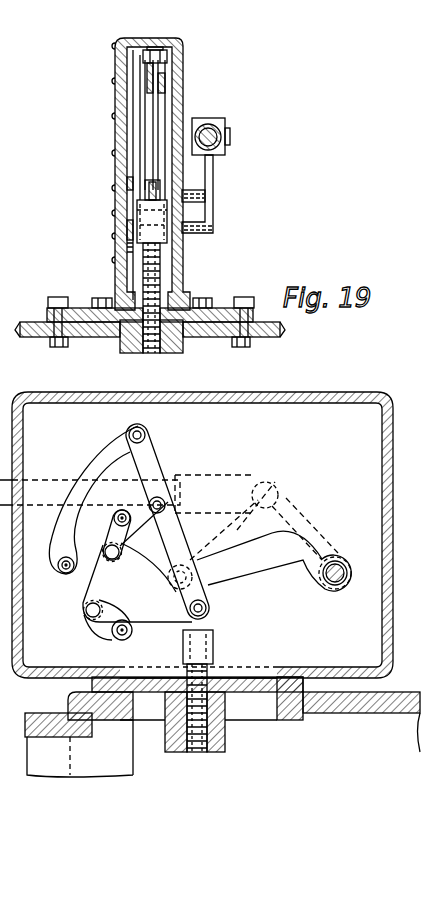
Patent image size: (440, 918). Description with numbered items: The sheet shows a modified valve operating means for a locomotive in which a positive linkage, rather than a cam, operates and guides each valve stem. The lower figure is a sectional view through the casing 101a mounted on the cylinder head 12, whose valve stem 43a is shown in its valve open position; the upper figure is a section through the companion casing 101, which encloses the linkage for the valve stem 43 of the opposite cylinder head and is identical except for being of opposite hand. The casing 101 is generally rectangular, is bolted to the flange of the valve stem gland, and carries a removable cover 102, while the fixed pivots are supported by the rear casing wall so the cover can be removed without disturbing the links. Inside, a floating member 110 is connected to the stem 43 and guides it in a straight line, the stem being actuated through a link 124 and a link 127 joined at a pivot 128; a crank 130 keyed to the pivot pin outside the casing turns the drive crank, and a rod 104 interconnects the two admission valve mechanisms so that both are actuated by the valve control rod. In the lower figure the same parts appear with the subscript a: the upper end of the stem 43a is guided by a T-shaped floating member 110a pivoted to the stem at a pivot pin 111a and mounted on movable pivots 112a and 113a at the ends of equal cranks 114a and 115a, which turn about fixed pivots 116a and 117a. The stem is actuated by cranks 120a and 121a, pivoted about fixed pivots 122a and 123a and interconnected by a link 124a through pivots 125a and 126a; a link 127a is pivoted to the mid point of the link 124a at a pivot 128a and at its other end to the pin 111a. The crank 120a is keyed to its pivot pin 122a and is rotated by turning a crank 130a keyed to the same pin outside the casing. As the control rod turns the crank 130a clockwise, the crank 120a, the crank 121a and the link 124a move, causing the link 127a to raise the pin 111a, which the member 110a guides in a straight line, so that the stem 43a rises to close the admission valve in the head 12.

In FIG. 19, the casing 101 is at (184, 48).
In FIG. 19, the removable cover 102 is at (133, 67).
In FIG. 19, the rod 104 is at (214, 155).
In FIG. 19, the floating member 110 is at (137, 212).
In FIG. 19, the link 124 is at (138, 62).
In FIG. 19, the link 127 is at (165, 130).
In FIG. 19, the pivot 128 is at (162, 50).
In FIG. 19, the crank 130 is at (209, 180).
In FIG. 19, the valve stem 43 is at (160, 279).
In FIG. 17, the casing 101a is at (367, 393).
In FIG. 17, the T-shaped member 110a is at (148, 602).
In FIG. 17, the pivot pin 111a is at (207, 608).
In FIG. 17, the pivot 112a is at (85, 613).
In FIG. 17, the pivot 113a is at (121, 552).
In FIG. 17, the crank 114a is at (100, 628).
In FIG. 17, the crank 115a is at (108, 529).
In FIG. 17, the fixed pivot 116a is at (127, 638).
In FIG. 17, the fixed pivot 117a is at (128, 503).
In FIG. 17, the crank 120a is at (253, 560).
In FIG. 17, the crank 121a is at (107, 452).
In FIG. 17, the fixed pivot 122a is at (323, 583).
In FIG. 17, the fixed pivot 123a is at (72, 578).
In FIG. 17, the link 124a is at (153, 470).
In FIG. 17, the pivot 125a is at (190, 562).
In FIG. 17, the pivot 126a is at (144, 432).
In FIG. 17, the link 127a is at (182, 490).
In FIG. 17, the pivot 128a is at (165, 511).
In FIG. 17, the crank 130a is at (297, 504).
In FIG. 17, the cylinder head 12 is at (403, 688).
In FIG. 17, the valve stem 43a is at (207, 740).